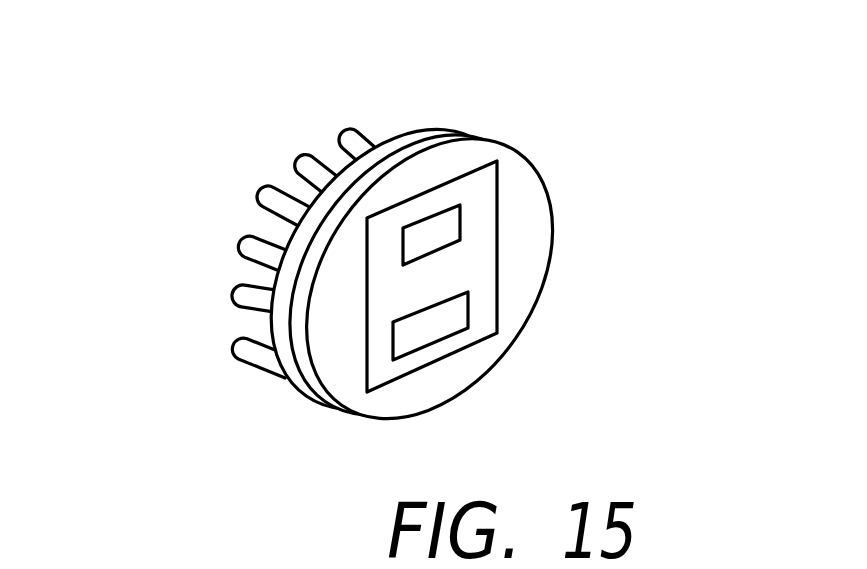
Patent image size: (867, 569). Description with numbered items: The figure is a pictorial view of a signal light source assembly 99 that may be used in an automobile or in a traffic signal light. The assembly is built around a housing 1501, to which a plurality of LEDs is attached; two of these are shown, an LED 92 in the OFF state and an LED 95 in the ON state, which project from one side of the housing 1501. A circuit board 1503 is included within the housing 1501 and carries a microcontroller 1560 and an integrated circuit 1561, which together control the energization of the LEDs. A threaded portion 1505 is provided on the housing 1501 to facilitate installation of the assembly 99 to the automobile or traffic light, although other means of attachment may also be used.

The LED 92 is at (352, 130).
The LED 95 is at (252, 298).
The signal light source assembly 99 is at (415, 289).
The housing 1501 is at (551, 195).
The circuit board 1503 is at (430, 363).
The threaded portion 1505 is at (302, 384).
The microcontroller 1560 is at (440, 235).
The integrated circuit 1561 is at (448, 310).